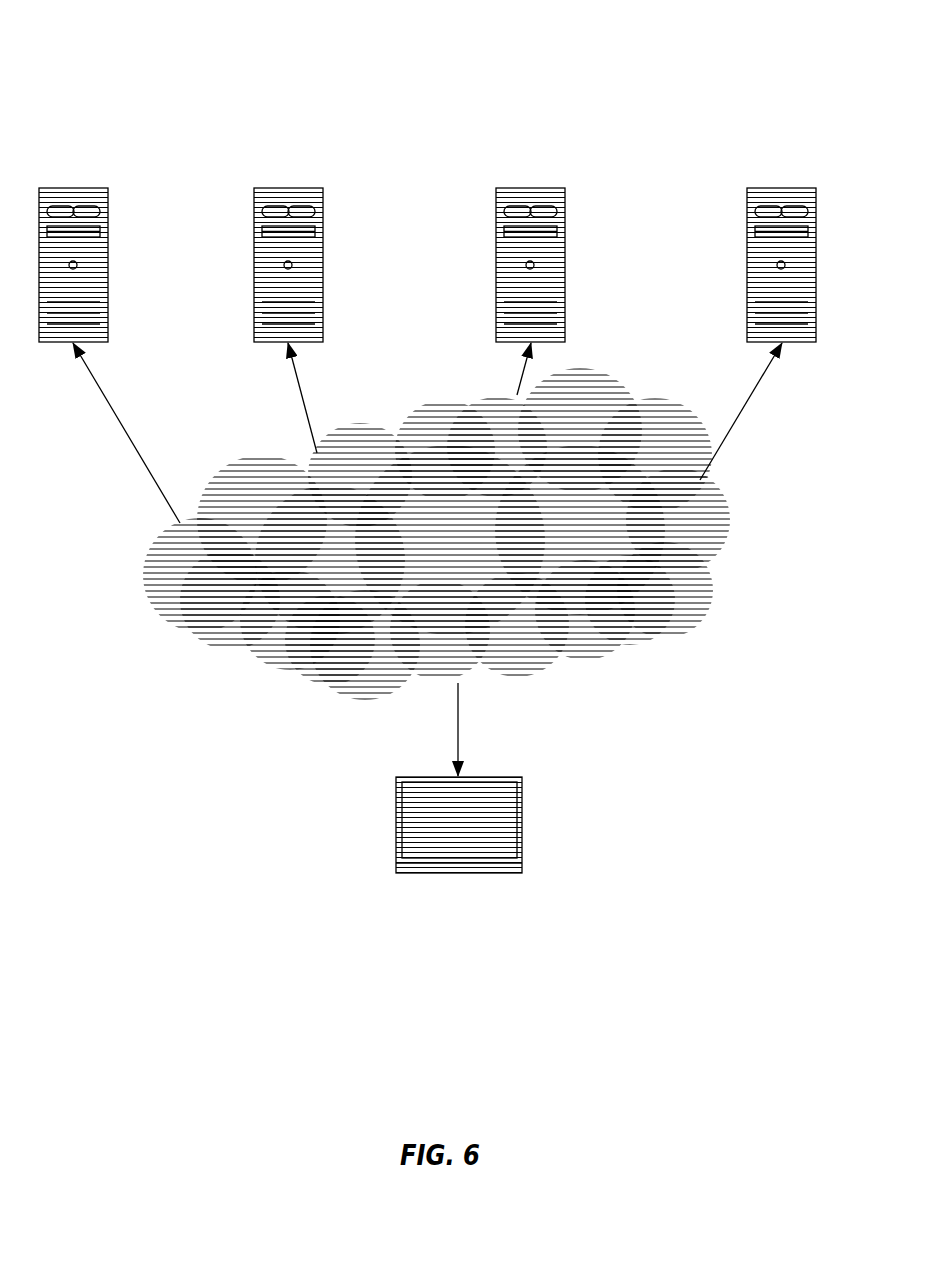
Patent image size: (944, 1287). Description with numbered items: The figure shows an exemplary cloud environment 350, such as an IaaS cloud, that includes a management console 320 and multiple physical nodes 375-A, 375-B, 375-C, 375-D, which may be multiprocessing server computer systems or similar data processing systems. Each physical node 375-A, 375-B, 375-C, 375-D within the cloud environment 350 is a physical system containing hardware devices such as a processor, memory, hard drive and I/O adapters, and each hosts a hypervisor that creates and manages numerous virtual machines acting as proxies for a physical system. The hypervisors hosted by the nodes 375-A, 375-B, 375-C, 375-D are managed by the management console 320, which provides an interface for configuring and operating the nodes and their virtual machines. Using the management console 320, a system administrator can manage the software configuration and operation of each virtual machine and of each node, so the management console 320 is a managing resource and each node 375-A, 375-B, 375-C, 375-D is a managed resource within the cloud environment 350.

The physical node 375-A is at (67, 187).
The physical node 375-B is at (287, 187).
The physical node 375-C is at (537, 187).
The physical node 375-D is at (780, 187).
The cloud environment 350 is at (137, 694).
The management console 320 is at (450, 873).